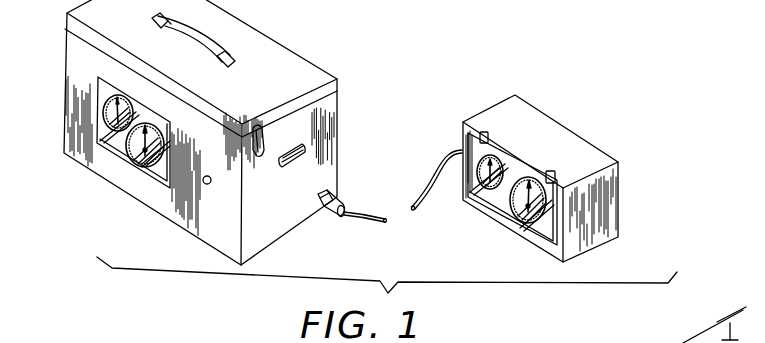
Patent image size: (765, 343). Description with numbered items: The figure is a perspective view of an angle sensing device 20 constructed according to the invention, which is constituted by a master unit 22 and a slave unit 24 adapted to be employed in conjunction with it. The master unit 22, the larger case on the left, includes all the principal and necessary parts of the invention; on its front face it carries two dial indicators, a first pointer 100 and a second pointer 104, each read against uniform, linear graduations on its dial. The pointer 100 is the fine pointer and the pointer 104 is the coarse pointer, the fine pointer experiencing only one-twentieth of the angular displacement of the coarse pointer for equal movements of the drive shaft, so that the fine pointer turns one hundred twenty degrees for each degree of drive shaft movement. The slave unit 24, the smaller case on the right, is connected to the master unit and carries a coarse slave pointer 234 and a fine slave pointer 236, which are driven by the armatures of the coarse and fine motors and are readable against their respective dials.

The angle sensing device 20 is at (463, 61).
The master unit 22 is at (206, 132).
The slave unit 24 is at (514, 178).
The first pointer 100 is at (136, 153).
The second pointer 104 is at (117, 117).
The coarse slave pointer 234 is at (488, 175).
The fine slave pointer 236 is at (530, 203).